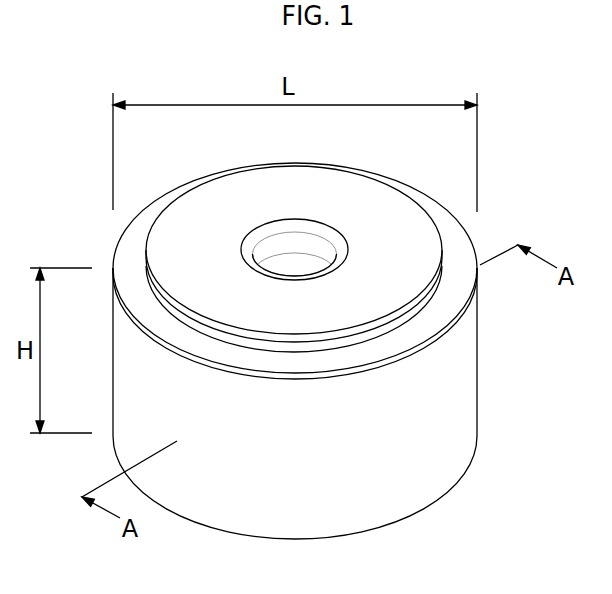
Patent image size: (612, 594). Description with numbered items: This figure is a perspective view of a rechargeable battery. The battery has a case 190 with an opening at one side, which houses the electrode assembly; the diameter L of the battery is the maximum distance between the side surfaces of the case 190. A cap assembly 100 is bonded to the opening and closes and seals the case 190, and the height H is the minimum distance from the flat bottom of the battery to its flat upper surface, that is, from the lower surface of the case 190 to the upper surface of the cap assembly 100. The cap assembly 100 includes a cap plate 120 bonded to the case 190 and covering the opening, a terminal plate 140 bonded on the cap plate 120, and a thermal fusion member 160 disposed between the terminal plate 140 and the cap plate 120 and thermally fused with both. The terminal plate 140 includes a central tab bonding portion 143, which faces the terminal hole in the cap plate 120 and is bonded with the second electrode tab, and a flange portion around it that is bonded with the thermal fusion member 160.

The cap assembly 100 is at (445, 195).
The cap plate 120 is at (462, 238).
The terminal plate 140 is at (378, 184).
The tab bonding portion 143 is at (295, 258).
The thermal fusion member 160 is at (250, 337).
The case 190 is at (465, 380).